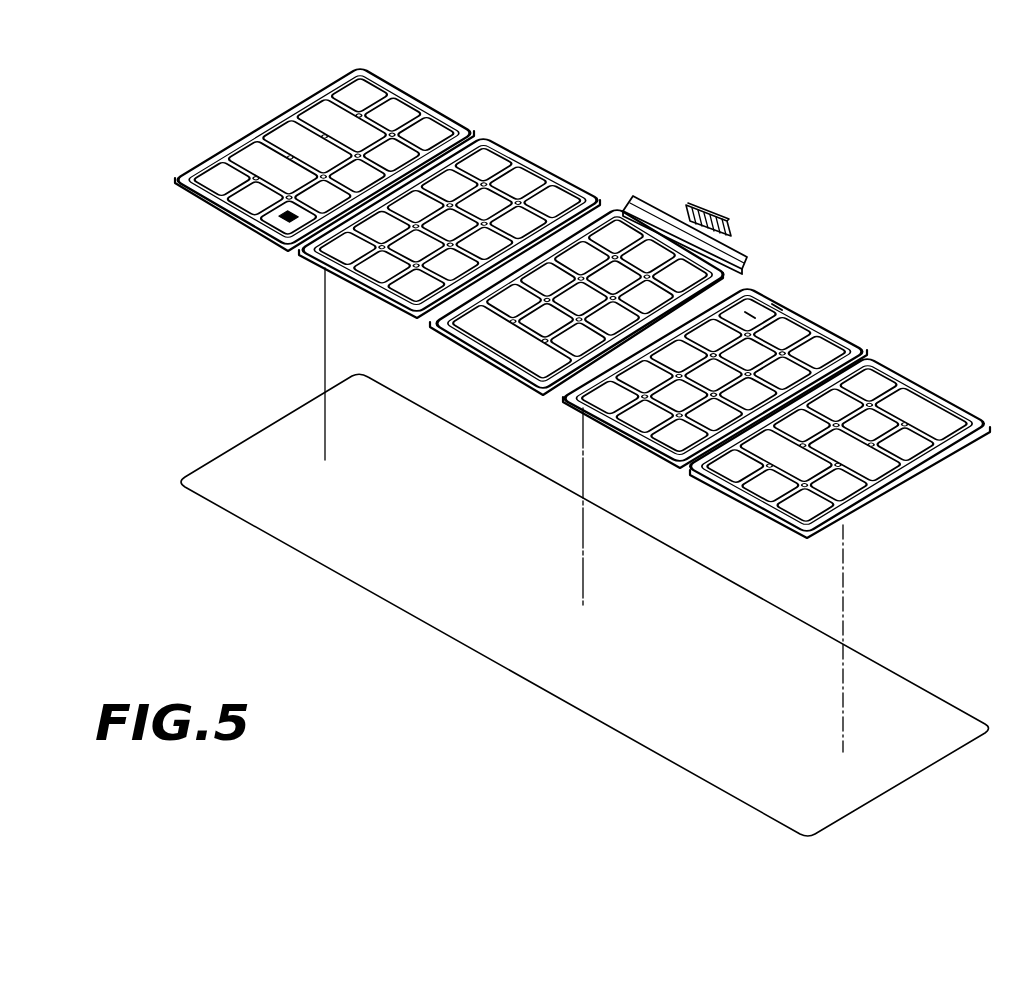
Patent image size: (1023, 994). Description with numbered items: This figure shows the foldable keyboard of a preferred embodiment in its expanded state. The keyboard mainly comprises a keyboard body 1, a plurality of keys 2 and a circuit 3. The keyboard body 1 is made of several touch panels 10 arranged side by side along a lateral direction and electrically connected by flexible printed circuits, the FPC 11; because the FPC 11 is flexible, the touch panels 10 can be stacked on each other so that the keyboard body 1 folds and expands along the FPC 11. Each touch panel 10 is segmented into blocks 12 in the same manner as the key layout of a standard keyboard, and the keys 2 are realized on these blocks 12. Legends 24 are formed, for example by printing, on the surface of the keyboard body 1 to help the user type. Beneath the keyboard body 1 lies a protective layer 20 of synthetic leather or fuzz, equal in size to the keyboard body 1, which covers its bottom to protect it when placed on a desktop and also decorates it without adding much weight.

The keyboard body 1 is at (150, 105).
The key 2 is at (750, 312).
The circuit 3 is at (744, 192).
The touch panel 10 is at (277, 116).
The FPC 11 is at (674, 322).
The block 12 is at (777, 307).
The protective layer 20 is at (255, 442).
The legend 24 is at (270, 225).